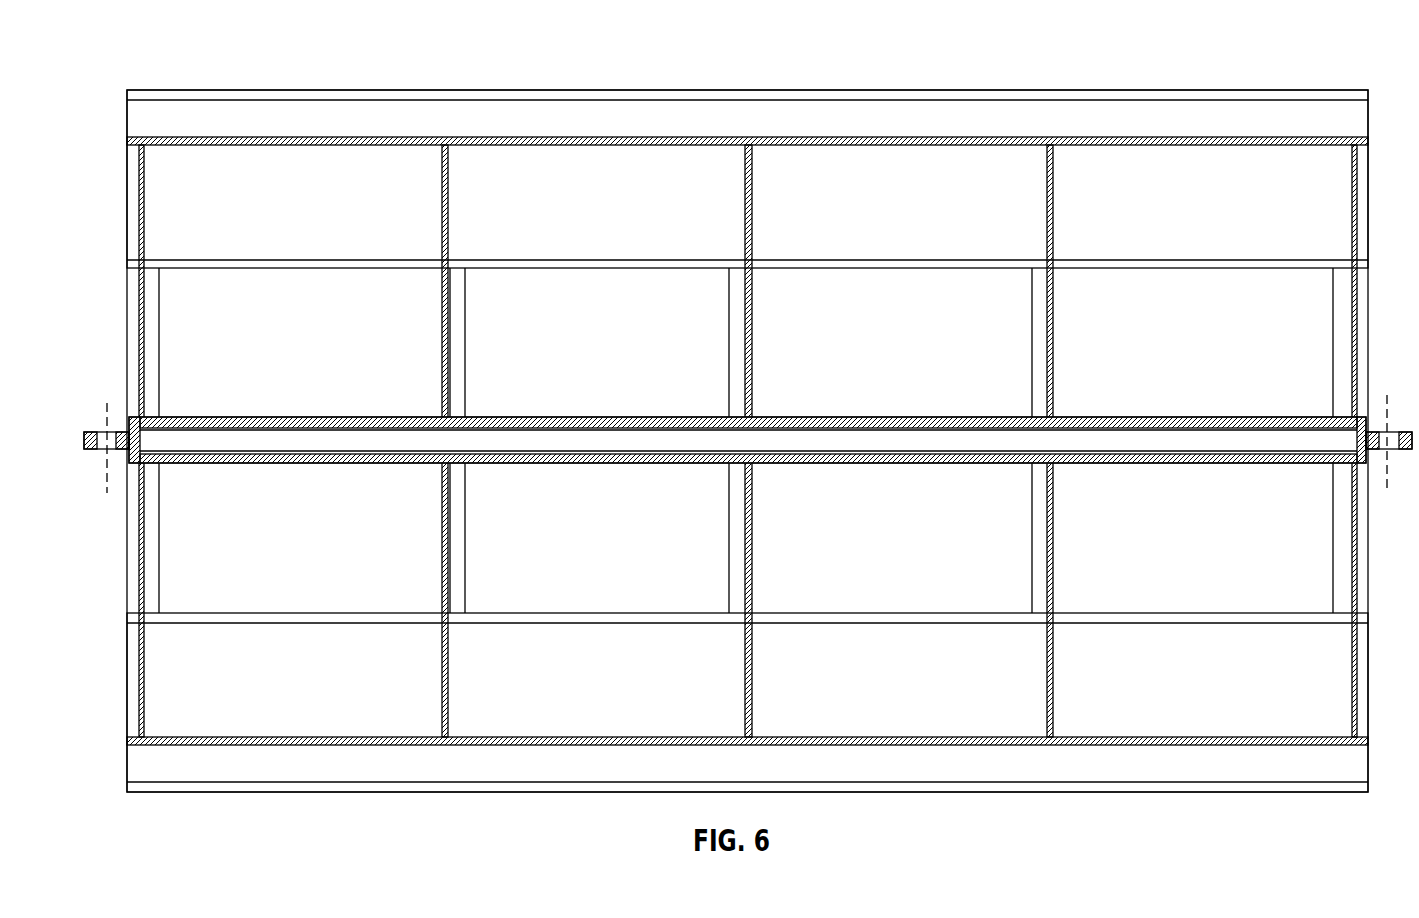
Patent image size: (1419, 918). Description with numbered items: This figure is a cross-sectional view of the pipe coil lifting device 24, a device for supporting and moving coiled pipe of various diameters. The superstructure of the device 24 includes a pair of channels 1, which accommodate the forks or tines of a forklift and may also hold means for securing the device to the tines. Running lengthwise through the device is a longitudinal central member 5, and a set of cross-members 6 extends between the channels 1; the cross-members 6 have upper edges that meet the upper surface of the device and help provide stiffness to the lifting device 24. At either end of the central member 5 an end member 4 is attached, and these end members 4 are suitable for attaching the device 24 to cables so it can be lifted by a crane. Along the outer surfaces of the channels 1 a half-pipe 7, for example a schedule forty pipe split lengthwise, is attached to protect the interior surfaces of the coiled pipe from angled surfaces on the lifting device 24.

The channel 1 is at (1371, 190).
The end member 4 is at (84, 437).
The longitudinal central member 5 is at (625, 432).
The cross-member 6 is at (725, 342).
The half-pipe 7 is at (1052, 112).
The lifting device 24 is at (1270, 46).